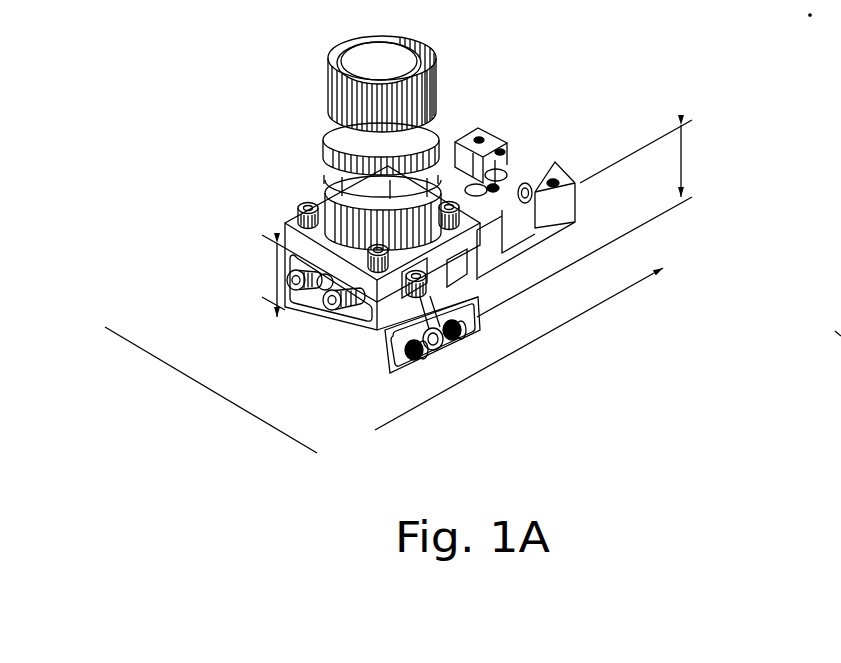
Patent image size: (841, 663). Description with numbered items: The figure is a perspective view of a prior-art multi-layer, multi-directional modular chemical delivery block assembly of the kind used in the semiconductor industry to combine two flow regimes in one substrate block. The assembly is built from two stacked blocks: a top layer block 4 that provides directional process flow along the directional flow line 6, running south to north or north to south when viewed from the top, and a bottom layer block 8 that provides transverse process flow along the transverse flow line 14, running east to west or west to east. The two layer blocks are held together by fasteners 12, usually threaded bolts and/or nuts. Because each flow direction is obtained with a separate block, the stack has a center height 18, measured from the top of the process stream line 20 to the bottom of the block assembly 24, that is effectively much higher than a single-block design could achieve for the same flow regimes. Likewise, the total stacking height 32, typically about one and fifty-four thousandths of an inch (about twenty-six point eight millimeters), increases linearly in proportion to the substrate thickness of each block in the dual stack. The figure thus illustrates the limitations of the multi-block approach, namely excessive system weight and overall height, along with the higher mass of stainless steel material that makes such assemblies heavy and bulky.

The top layer block 4 is at (516, 220).
The directional flow line 6 is at (536, 349).
The bottom layer block 8 is at (385, 373).
The fasteners 12 is at (441, 340).
The transverse flow line 14 is at (196, 385).
The center height 18 is at (160, 253).
The process stream line 20 is at (318, 303).
The bottom of the block assembly 24 is at (283, 315).
The total stacking height 32 is at (735, 130).